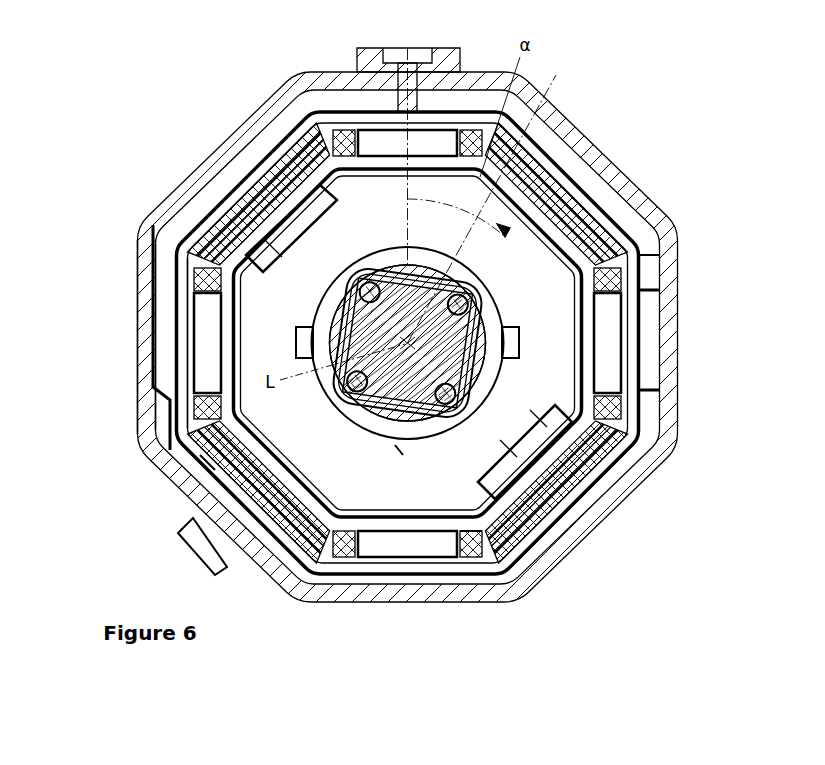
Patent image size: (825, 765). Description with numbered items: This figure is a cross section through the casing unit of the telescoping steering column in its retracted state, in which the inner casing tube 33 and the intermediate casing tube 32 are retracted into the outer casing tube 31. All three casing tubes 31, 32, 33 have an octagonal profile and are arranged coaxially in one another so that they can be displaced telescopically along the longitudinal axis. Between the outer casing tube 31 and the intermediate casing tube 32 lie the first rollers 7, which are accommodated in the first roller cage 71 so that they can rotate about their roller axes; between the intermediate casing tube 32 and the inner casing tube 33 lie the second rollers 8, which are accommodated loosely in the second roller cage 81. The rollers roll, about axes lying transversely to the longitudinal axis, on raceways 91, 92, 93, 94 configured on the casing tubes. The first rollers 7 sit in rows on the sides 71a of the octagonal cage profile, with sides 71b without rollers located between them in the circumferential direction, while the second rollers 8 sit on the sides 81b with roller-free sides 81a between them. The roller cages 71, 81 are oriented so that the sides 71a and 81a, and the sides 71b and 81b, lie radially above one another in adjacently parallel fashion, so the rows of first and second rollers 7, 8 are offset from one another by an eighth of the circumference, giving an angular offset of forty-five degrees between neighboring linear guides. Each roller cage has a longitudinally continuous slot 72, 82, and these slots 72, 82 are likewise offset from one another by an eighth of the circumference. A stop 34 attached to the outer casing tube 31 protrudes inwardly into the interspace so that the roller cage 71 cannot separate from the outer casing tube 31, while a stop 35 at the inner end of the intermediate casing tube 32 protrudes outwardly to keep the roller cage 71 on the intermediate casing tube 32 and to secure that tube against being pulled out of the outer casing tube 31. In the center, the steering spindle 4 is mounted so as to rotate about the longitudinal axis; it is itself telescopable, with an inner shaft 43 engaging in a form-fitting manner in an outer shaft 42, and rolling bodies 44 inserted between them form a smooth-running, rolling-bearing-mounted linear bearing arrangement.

The steering spindle 4 is at (362, 440).
The first rollers 7 is at (232, 185).
The second rollers 8 is at (427, 140).
The outer casing tube 31 is at (148, 337).
The intermediate casing tube 32 is at (172, 303).
The inner casing tube 33 is at (176, 262).
The stop 34 is at (428, 50).
The stop 35 is at (634, 452).
The outer shaft 42 is at (205, 462).
The inner shaft 43 is at (393, 445).
The rolling bodies 44 is at (468, 556).
The first roller cage 71 is at (660, 222).
The sides of first roller cage with rollers 71a is at (628, 212).
The sides of first roller cage without rollers 71b is at (340, 110).
The slot 72 is at (494, 572).
The second roller cage 81 is at (658, 255).
The sides of second roller cage without rollers 81a is at (505, 185).
The sides of second roller cage with rollers 81b is at (650, 402).
The slot 82 is at (200, 555).
The raceway 91 is at (240, 188).
The raceway 92 is at (264, 205).
The raceway 93 is at (226, 386).
The raceway 94 is at (200, 322).